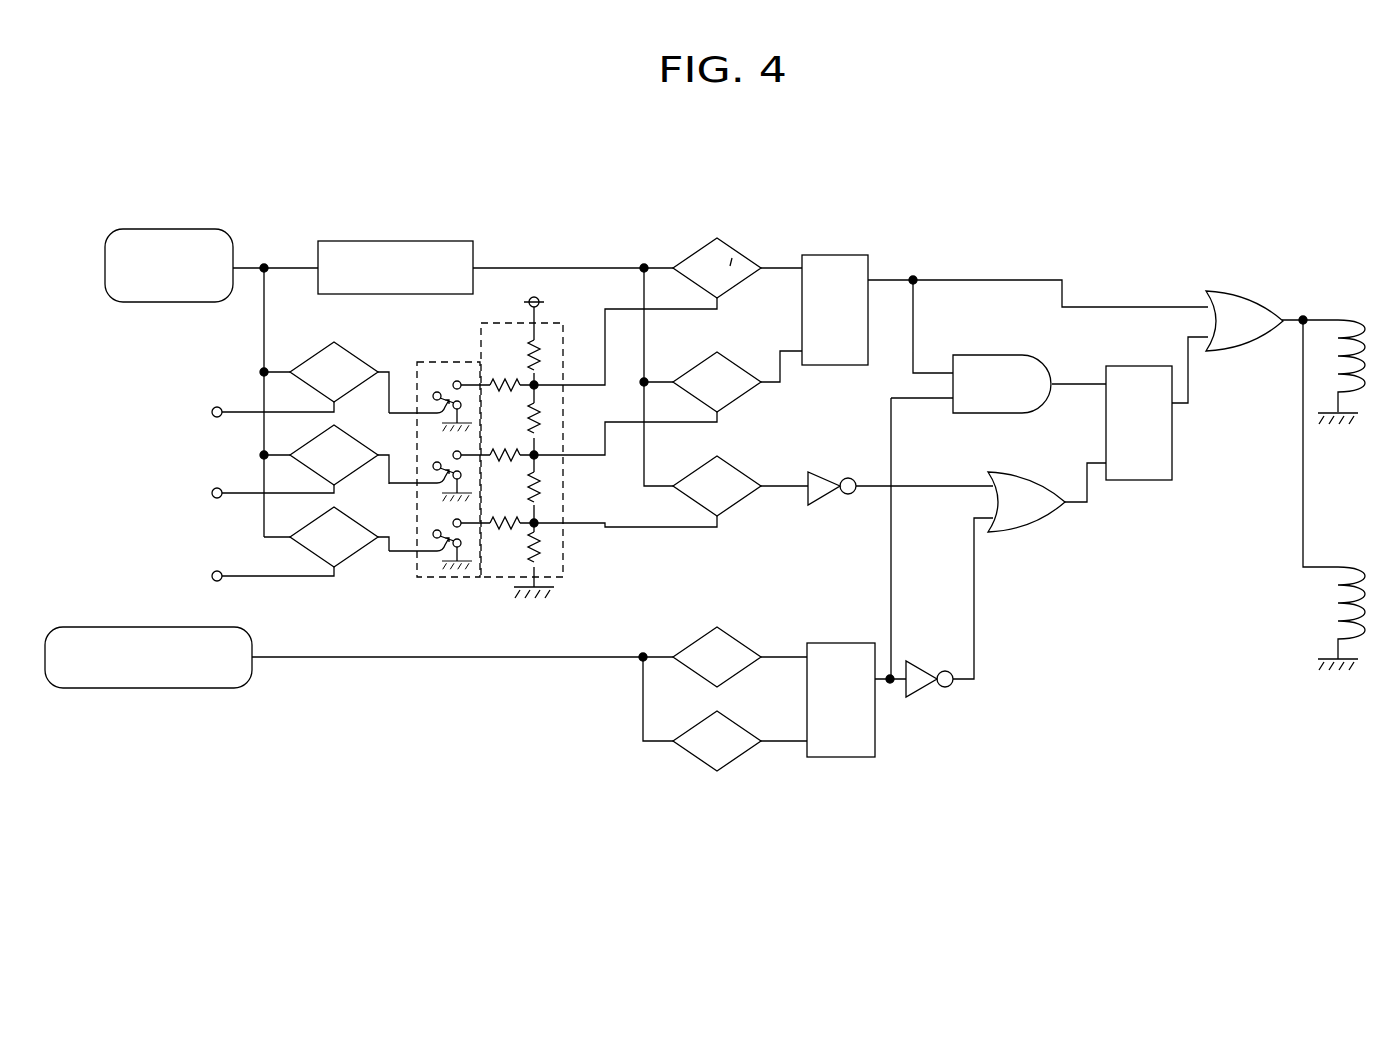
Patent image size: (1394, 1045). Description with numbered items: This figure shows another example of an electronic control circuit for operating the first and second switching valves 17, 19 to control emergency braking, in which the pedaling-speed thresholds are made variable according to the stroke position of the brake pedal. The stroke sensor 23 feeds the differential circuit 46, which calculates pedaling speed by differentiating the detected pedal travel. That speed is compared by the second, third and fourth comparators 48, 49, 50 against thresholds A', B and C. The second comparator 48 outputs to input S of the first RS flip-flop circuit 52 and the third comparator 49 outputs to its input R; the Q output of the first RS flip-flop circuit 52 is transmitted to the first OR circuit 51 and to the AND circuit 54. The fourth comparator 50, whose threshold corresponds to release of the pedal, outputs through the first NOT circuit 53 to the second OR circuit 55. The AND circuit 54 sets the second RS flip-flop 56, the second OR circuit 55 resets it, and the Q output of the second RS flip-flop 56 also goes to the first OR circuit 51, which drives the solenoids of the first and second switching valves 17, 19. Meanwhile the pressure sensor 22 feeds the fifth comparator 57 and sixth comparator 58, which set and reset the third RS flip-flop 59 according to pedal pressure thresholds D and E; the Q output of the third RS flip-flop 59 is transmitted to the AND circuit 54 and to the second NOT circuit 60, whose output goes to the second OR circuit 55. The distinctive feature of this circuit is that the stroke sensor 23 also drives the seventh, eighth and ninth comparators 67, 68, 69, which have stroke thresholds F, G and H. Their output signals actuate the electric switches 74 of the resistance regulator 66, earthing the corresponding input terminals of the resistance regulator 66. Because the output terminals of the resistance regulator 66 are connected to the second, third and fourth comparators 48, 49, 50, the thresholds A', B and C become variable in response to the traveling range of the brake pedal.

The first switching valve 17 is at (1343, 320).
The second switching valve 19 is at (1342, 568).
The pressure sensor 22 is at (128, 626).
The stroke sensor 23 is at (180, 229).
The differential circuit 46 is at (410, 241).
The second comparator 48 is at (737, 228).
The third comparator 49 is at (728, 360).
The fourth comparator 50 is at (738, 470).
The first OR circuit 51 is at (1230, 350).
The first RS flip-flop circuit 52 is at (830, 255).
The first NOT circuit 53 is at (826, 475).
The AND circuit 54 is at (994, 355).
The second OR circuit 55 is at (1022, 528).
The second RS flip-flop 56 is at (1143, 480).
The fifth comparator 57 is at (728, 642).
The sixth comparator 58 is at (738, 763).
The third RS flip-flop 59 is at (857, 758).
The second NOT circuit 60 is at (921, 696).
The resistance regulator 66 is at (572, 553).
The seventh comparator 67 is at (360, 358).
The eighth comparator 68 is at (364, 428).
The ninth comparator 69 is at (359, 555).
The electric switches 74 is at (437, 580).